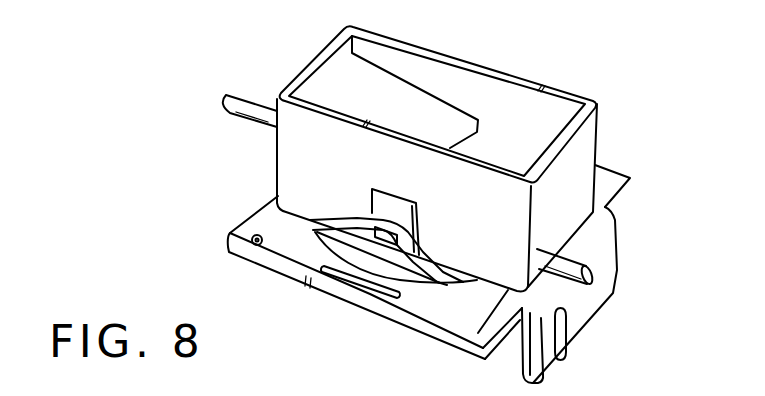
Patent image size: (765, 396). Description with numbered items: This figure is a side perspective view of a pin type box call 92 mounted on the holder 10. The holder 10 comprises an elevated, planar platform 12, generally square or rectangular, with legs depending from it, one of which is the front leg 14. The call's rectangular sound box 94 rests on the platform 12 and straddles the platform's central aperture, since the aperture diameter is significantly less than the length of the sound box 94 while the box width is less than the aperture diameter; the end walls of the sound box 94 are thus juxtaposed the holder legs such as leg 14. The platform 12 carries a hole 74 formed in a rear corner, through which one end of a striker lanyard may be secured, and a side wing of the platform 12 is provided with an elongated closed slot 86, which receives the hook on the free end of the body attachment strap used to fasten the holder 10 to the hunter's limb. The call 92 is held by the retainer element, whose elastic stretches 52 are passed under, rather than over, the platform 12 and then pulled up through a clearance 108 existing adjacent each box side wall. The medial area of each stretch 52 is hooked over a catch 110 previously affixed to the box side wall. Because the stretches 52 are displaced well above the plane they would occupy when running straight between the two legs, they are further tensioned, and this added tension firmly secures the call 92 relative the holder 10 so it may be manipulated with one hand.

The holder 10 is at (643, 200).
The platform 12 is at (443, 347).
The front leg 14 is at (578, 307).
The elastic stretch 52 is at (427, 250).
The hole 74 is at (251, 240).
The slot 86 is at (345, 276).
The pin type box call 92 is at (522, 30).
The sound box 94 is at (319, 62).
The clearance 108 is at (400, 267).
The catch 110 is at (372, 222).